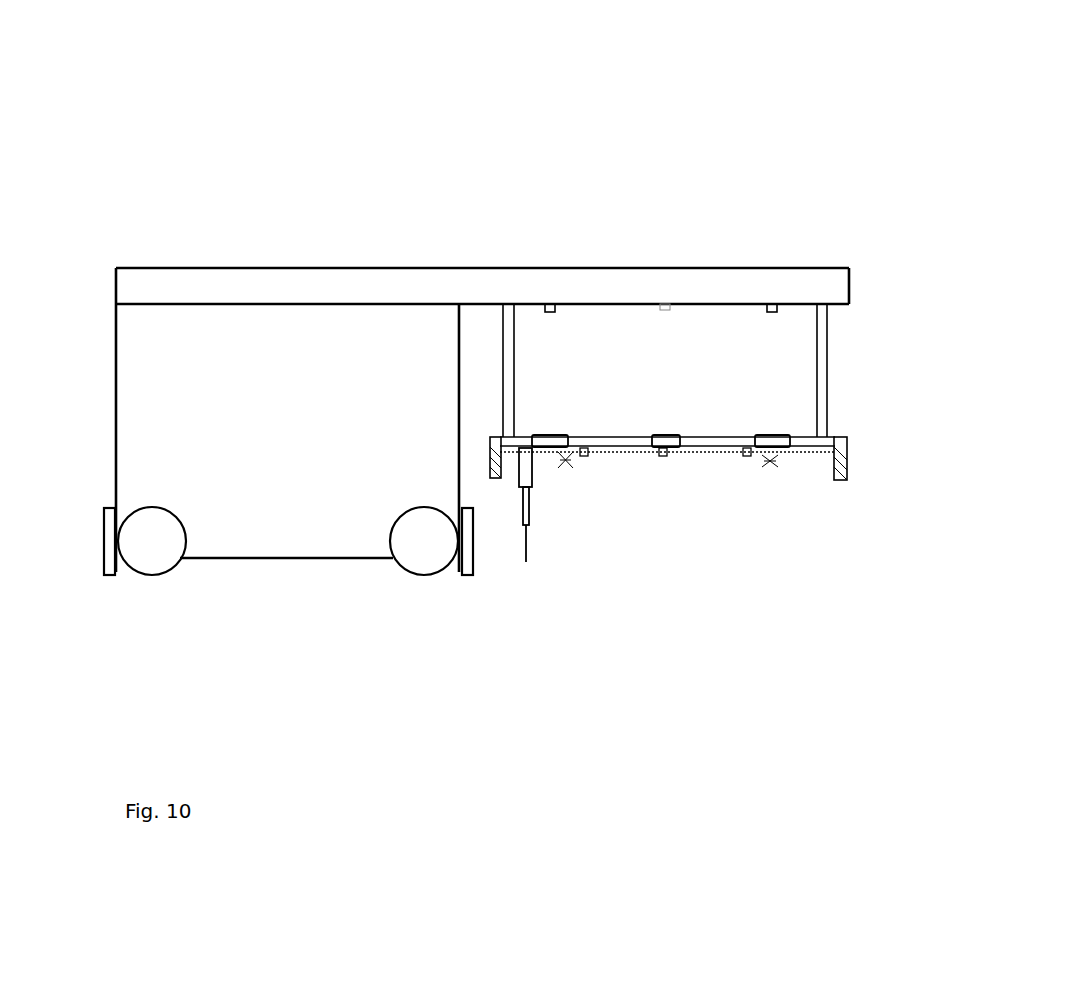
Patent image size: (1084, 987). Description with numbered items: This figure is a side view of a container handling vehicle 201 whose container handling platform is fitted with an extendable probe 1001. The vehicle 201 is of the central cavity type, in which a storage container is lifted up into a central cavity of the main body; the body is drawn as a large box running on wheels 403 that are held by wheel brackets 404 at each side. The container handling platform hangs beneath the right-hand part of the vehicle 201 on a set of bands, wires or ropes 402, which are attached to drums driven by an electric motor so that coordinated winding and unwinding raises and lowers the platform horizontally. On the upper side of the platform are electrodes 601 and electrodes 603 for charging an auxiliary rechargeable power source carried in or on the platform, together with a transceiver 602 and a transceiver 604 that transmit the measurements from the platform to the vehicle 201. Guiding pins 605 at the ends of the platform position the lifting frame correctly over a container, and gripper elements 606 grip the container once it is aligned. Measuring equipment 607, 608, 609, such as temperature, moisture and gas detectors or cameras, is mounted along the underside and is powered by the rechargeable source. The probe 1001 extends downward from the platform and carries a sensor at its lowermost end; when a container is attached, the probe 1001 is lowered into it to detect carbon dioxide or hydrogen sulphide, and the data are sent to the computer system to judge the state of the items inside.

The container handling vehicle 201 is at (260, 346).
The bands, wires or ropes 402 is at (490, 350).
The wheel 403 is at (163, 574).
The wheel bracket 404 is at (101, 569).
The electrodes 601 is at (763, 288).
The transceiver 602 is at (663, 286).
The electrodes 603 is at (543, 413).
The transceiver 604 is at (649, 419).
The guiding pins 605 is at (495, 501).
The gripper elements 606 is at (567, 492).
The measuring equipment 607 is at (592, 480).
The measuring equipment 608 is at (665, 481).
The measuring equipment 609 is at (747, 481).
The probe 1001 is at (522, 586).